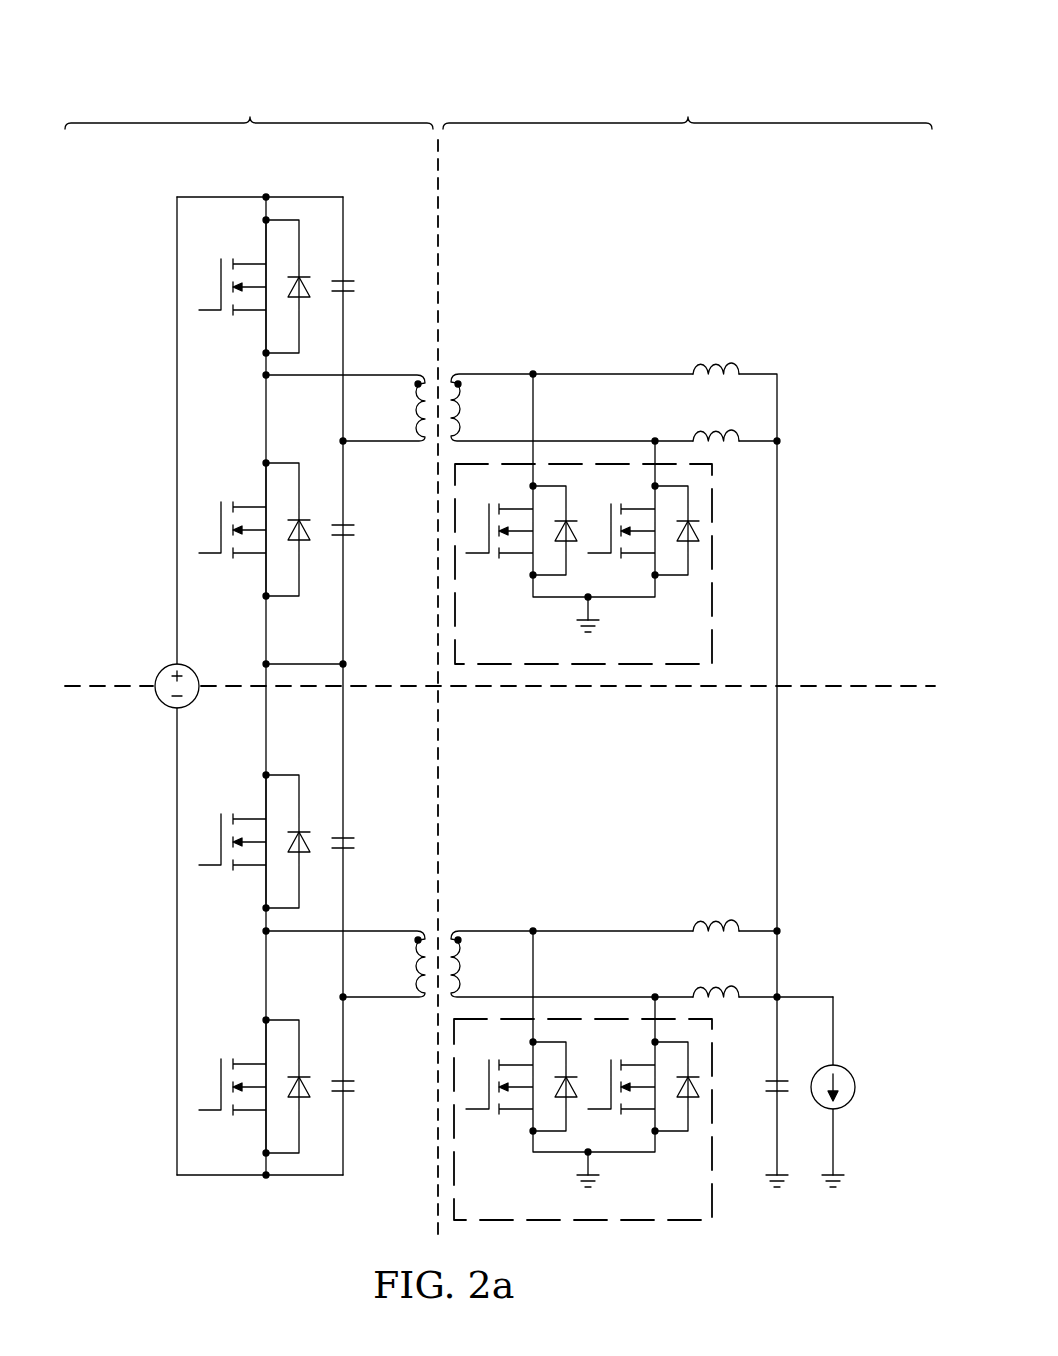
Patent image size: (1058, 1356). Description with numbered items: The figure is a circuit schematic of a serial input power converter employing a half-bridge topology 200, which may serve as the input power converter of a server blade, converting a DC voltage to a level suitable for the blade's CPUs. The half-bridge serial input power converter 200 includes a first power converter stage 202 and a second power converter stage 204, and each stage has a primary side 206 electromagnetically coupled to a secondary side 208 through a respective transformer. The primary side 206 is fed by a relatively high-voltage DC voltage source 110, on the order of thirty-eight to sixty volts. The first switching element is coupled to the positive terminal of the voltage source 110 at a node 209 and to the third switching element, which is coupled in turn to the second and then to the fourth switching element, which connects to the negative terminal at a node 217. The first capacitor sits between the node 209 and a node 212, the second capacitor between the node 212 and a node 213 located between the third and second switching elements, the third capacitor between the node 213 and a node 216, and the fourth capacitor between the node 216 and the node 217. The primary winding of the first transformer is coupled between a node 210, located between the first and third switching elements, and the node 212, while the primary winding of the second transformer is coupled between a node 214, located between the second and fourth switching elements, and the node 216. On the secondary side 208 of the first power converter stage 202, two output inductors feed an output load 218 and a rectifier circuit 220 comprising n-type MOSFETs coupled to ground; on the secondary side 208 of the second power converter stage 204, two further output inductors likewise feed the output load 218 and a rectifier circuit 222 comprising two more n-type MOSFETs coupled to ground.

The half-bridge serial input power converter 200 is at (386, 72).
The first power converter stage 202 is at (146, 406).
The second power converter stage 204 is at (146, 968).
The primary side 206 is at (249, 107).
The secondary side 208 is at (687, 107).
The node 209 is at (263, 195).
The node 210 is at (262, 373).
The node 212 is at (348, 448).
The node 213 is at (310, 662).
The node 214 is at (262, 933).
The node 216 is at (350, 1005).
The node 217 is at (262, 1187).
The output load 218 is at (857, 1088).
The rectifier circuit 220 is at (683, 641).
The rectifier circuit 222 is at (683, 1199).
The voltage source 110 is at (170, 708).